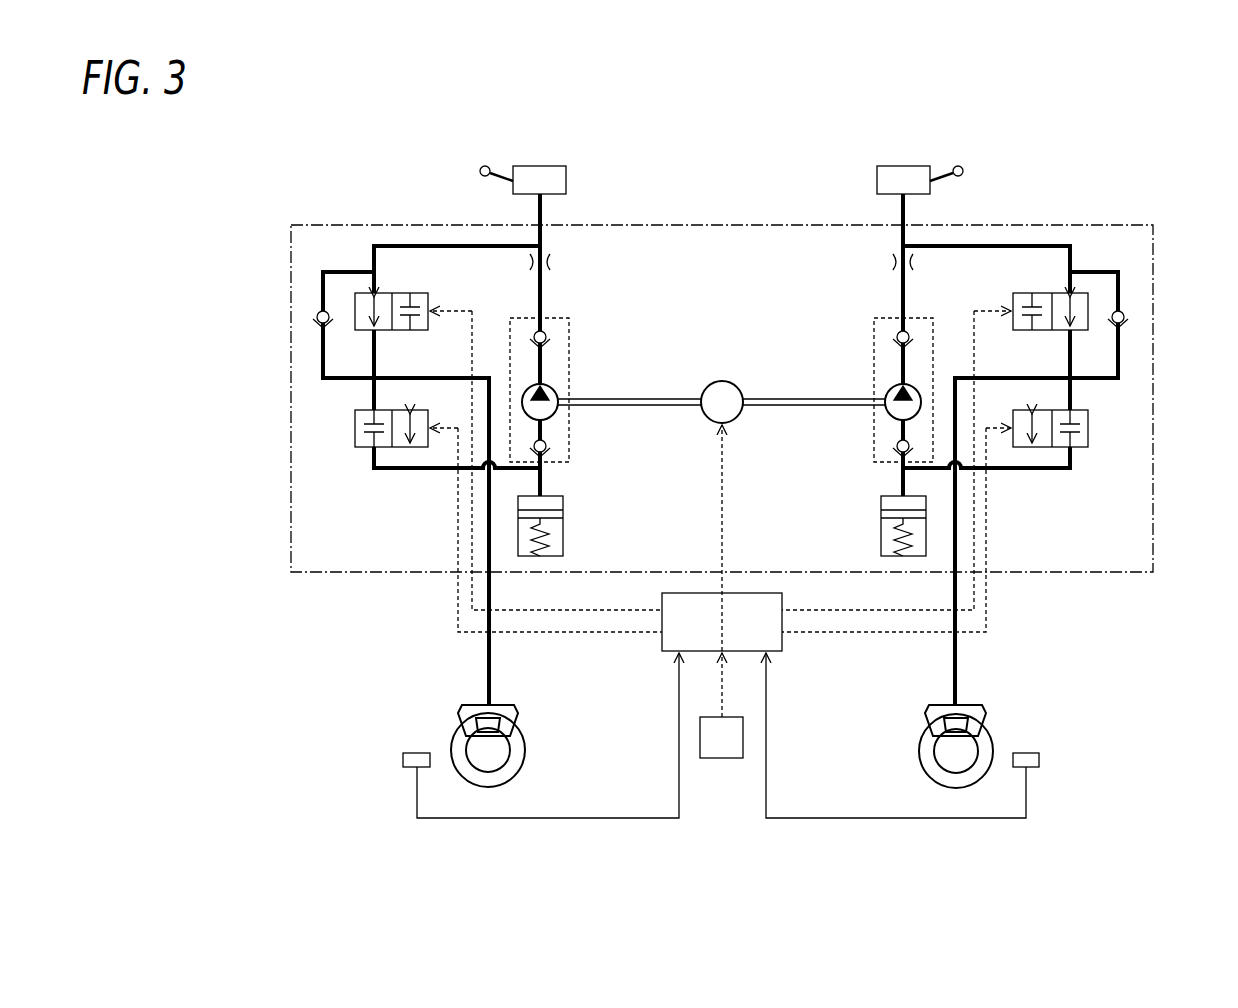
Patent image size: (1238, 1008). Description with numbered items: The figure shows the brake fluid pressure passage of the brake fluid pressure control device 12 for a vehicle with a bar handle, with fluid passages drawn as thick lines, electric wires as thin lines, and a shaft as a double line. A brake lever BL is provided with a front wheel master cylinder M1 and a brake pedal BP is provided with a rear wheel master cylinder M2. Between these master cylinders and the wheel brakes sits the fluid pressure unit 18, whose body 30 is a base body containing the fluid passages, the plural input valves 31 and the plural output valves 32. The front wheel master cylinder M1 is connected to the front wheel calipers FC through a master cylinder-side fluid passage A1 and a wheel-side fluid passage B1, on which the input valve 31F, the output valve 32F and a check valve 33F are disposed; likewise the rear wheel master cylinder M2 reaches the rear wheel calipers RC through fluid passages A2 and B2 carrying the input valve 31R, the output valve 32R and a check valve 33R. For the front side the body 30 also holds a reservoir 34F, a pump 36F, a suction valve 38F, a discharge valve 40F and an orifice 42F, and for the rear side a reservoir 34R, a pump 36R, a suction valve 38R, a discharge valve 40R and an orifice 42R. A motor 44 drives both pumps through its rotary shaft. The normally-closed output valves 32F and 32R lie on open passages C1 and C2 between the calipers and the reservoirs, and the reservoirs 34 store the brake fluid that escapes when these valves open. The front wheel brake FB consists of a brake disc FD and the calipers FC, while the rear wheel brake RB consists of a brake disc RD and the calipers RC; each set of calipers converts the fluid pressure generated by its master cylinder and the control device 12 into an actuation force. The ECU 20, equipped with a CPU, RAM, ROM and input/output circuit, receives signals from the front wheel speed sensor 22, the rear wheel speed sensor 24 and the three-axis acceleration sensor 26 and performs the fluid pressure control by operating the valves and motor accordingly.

The brake fluid pressure control device 12 is at (722, 147).
The fluid pressure unit 18 is at (1158, 233).
The ECU 20 is at (783, 640).
The front wheel speed sensor 22 is at (1040, 760).
The rear wheel speed sensor 24 is at (402, 760).
The acceleration sensor 26 is at (722, 760).
The body 30 is at (1153, 383).
The input valves 31 is at (1017, 270).
The output valves 32 is at (1125, 432).
The rear wheel input valve 31R is at (410, 292).
The front wheel input valve 31F is at (1027, 292).
The rear wheel output valve 32R is at (354, 428).
The front wheel output valve 32F is at (1089, 428).
The rear wheel check valve 33R is at (316, 313).
The front wheel check valve 33F is at (1125, 313).
The reservoirs 34 is at (825, 490).
The rear wheel reservoir 34R is at (565, 503).
The front wheel reservoir 34F is at (878, 503).
The rear wheel pump 36R is at (555, 388).
The front wheel pump 36F is at (888, 388).
The rear wheel suction valve 38R is at (548, 446).
The front wheel suction valve 38F is at (895, 446).
The rear wheel discharge valve 40R is at (548, 336).
The front wheel discharge valve 40F is at (895, 336).
The rear wheel orifice 42R is at (553, 262).
The front wheel orifice 42F is at (890, 262).
The motor 44 is at (722, 380).
The front wheel master cylinder M1 is at (903, 165).
The rear wheel master cylinder M2 is at (540, 165).
The brake lever BL is at (946, 168).
The brake pedal BP is at (498, 168).
The front wheel master cylinder-side fluid passage A1 is at (1000, 244).
The rear wheel master cylinder-side fluid passage A2 is at (442, 244).
The front wheel-side fluid passage B1 is at (958, 545).
The rear wheel-side fluid passage B2 is at (487, 553).
The front open passage C1 is at (1042, 471).
The rear open passage C2 is at (400, 471).
The rear wheel calipers RC is at (470, 704).
The rear brake disc RD is at (527, 750).
The front wheel calipers FC is at (975, 704).
The front brake disc FD is at (918, 751).
The rear wheel brake RB is at (463, 790).
The front wheel brake FB is at (980, 790).